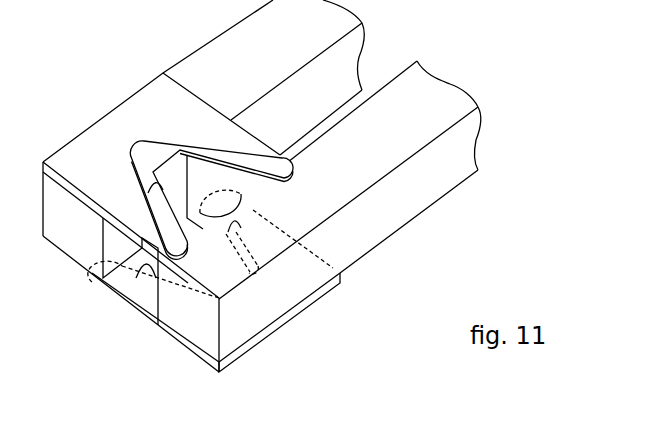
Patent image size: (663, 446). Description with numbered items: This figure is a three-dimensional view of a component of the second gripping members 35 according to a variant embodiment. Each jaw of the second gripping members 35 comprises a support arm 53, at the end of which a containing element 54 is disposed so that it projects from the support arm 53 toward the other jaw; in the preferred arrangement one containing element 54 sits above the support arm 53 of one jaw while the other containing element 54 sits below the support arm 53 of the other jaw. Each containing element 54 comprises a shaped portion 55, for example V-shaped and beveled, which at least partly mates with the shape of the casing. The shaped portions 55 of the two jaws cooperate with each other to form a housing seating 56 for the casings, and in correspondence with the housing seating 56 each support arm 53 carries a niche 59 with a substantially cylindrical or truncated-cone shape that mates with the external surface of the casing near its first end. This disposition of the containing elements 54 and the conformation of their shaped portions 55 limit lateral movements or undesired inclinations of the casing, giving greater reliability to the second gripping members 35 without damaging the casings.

The second gripping members 35 is at (203, 370).
The support arm 53 is at (251, 30).
The containing element 54 is at (145, 100).
The shaped portion 55 is at (157, 187).
The housing seating 56 is at (173, 168).
The niche 59 is at (243, 224).